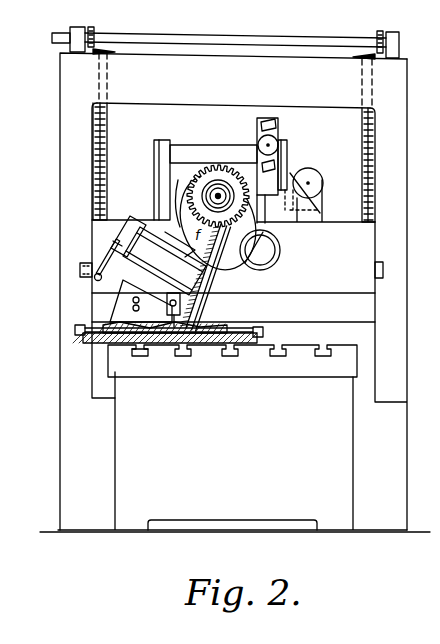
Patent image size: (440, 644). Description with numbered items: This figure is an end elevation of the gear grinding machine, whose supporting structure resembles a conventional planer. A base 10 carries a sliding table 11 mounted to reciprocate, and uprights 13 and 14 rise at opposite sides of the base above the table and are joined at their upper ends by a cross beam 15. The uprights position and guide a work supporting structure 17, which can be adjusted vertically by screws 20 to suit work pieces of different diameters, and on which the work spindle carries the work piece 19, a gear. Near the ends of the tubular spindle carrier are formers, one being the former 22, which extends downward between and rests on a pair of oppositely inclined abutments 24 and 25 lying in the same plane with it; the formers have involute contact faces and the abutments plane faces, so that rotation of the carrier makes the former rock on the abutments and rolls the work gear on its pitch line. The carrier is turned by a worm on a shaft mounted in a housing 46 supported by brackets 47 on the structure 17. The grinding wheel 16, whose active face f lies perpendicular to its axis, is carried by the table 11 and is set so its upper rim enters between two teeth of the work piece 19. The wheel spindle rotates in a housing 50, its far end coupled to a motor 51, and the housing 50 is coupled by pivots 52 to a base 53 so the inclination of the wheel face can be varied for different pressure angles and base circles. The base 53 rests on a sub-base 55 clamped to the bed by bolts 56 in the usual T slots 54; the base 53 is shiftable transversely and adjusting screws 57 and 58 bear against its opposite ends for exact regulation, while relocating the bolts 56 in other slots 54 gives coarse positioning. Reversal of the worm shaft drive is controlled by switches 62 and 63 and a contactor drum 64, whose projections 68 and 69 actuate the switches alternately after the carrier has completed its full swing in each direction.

The base 10 is at (332, 462).
The sliding table 11 is at (302, 347).
The upright 13 is at (398, 115).
The upright 14 is at (63, 135).
The cross beam 15 is at (205, 65).
The grinding wheel 16 is at (200, 305).
The work supporting structure 17 is at (335, 230).
The work piece 19 is at (212, 165).
The screws 20 is at (107, 137).
The former 22 is at (227, 253).
The abutment 24 is at (280, 242).
The abutment 25 is at (180, 208).
The housing 46 is at (177, 139).
The brackets 47 is at (158, 168).
The housing 50 is at (152, 240).
The motor 51 is at (128, 232).
The pivots 52 is at (178, 284).
The base 53 is at (123, 303).
The T slots 54 is at (273, 357).
The sub-base 55 is at (168, 344).
The bolts 56 is at (140, 358).
The adjusting screw 57 is at (85, 326).
The adjusting screw 58 is at (249, 328).
The switch 62 is at (279, 130).
The switch 63 is at (267, 170).
The contactor drum 64 is at (267, 123).
The projection 68 is at (281, 140).
The projection 69 is at (258, 150).